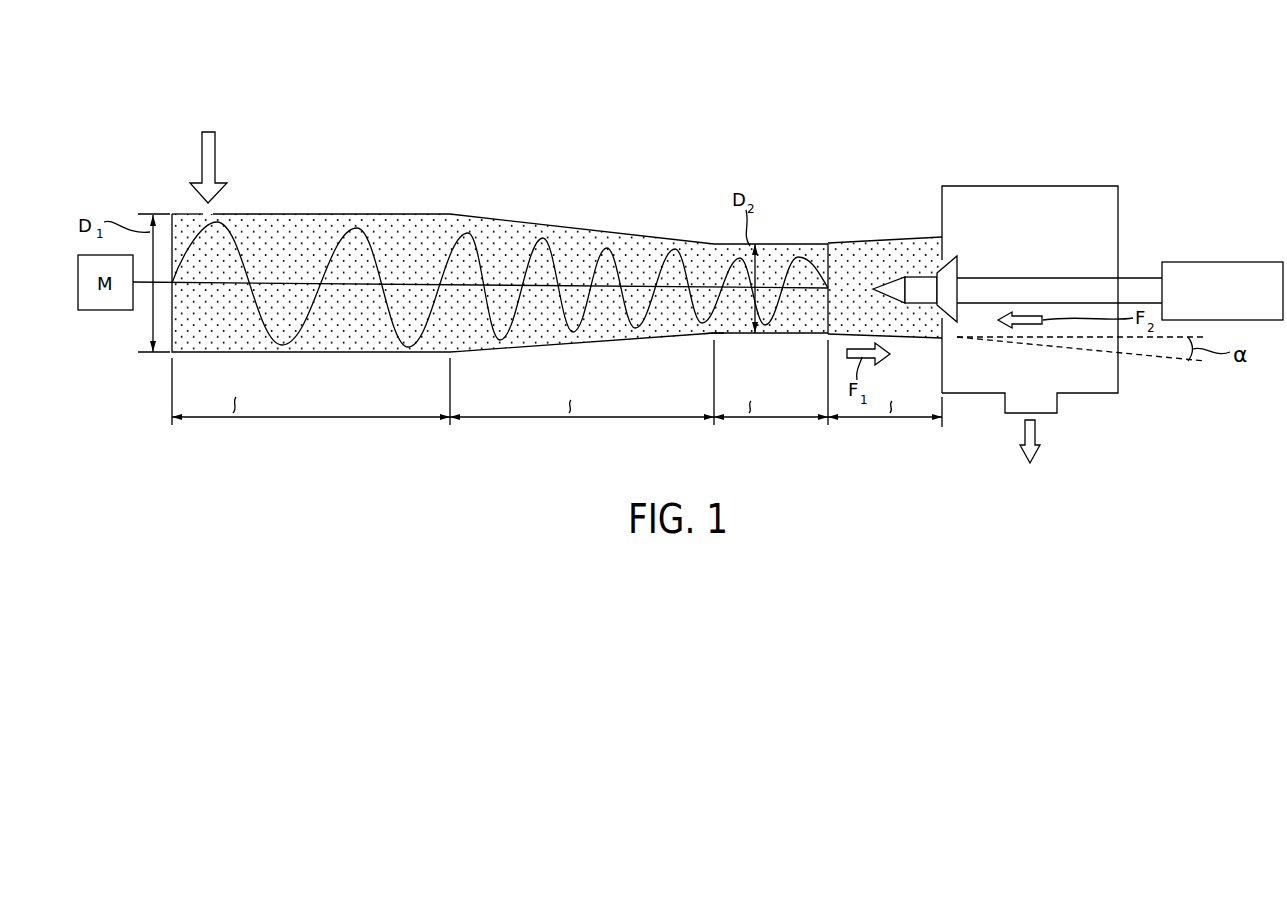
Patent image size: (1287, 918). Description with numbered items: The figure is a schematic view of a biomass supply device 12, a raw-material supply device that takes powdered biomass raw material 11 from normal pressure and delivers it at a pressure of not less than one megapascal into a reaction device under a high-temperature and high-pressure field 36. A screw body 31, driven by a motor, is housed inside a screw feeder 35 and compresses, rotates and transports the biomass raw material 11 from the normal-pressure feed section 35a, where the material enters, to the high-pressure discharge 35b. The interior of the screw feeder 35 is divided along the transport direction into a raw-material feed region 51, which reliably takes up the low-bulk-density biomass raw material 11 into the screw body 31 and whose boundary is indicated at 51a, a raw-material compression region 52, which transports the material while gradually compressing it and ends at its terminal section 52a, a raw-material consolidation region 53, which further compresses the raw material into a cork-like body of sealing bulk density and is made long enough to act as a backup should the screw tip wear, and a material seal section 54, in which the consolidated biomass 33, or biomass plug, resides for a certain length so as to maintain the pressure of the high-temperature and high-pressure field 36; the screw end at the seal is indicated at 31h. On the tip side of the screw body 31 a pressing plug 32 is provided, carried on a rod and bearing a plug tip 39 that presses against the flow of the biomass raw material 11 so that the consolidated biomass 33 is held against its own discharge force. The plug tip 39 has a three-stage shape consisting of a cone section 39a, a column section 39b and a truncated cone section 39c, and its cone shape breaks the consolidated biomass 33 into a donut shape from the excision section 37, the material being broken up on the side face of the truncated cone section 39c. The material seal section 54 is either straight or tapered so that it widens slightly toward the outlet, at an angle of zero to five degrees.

The biomass raw material 11 is at (210, 142).
The biomass supply device 12 is at (637, 110).
The screw body 31 is at (378, 272).
The screw tip 31h is at (828, 252).
The pressing plug 32 is at (1032, 277).
The consolidated biomass (biomass plug) 33 is at (852, 243).
The screw feeder 35 is at (310, 212).
The normal-pressure feed section 35a is at (202, 212).
The high-pressure discharge 35b is at (936, 320).
The high-temperature and high-pressure field 36 is at (1087, 200).
The excision section 37 is at (957, 323).
The plug tip 39 is at (936, 211).
The cone section 39a is at (882, 280).
The column section 39b is at (928, 273).
The truncated cone section 39c is at (977, 234).
The raw-material feed region 51 is at (311, 399).
The boundary of first region 51a is at (452, 355).
The raw-material compression region 52 is at (582, 392).
The terminal section 52a is at (714, 337).
The raw-material consolidation region 53 is at (771, 392).
The material seal section 54 is at (885, 411).